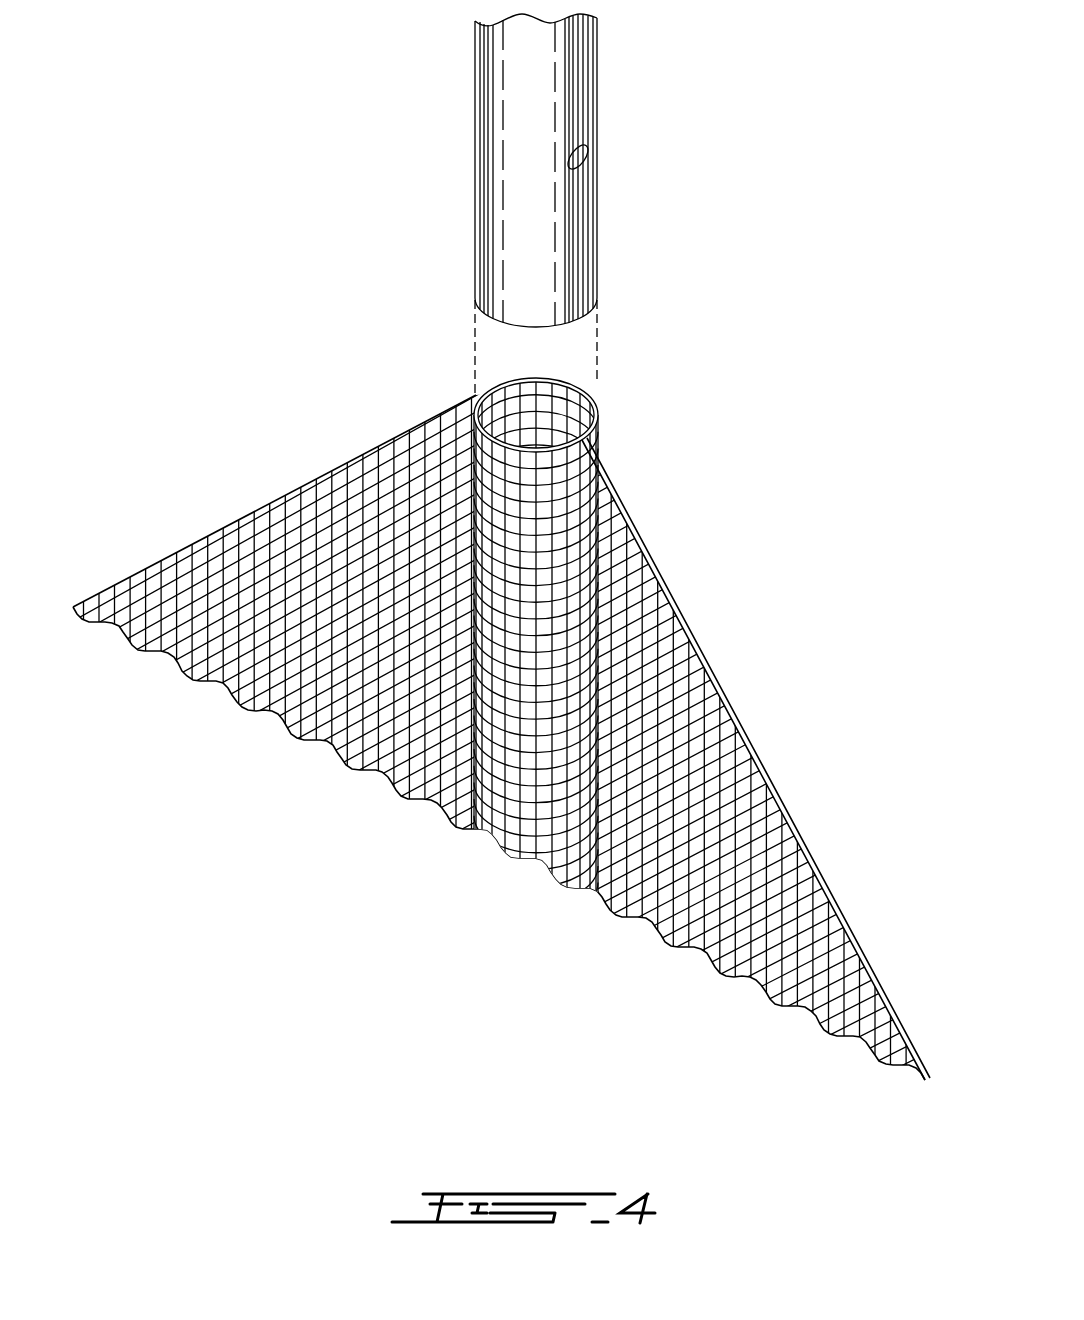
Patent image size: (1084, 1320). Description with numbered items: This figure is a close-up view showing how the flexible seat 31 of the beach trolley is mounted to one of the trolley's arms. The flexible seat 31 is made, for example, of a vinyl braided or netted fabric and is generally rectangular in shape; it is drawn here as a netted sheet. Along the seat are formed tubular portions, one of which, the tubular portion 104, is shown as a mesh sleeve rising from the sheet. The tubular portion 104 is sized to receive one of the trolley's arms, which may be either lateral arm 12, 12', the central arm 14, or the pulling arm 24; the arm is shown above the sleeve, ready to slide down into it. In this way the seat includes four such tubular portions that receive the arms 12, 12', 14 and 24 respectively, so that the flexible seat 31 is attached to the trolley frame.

The lateral arm 12 is at (693, 203).
The lateral arm 12' is at (693, 203).
The central arm 14 is at (693, 203).
The pulling arm 24 is at (597, 130).
The tubular portion 104 is at (572, 405).
The flexible seat 31 is at (720, 728).